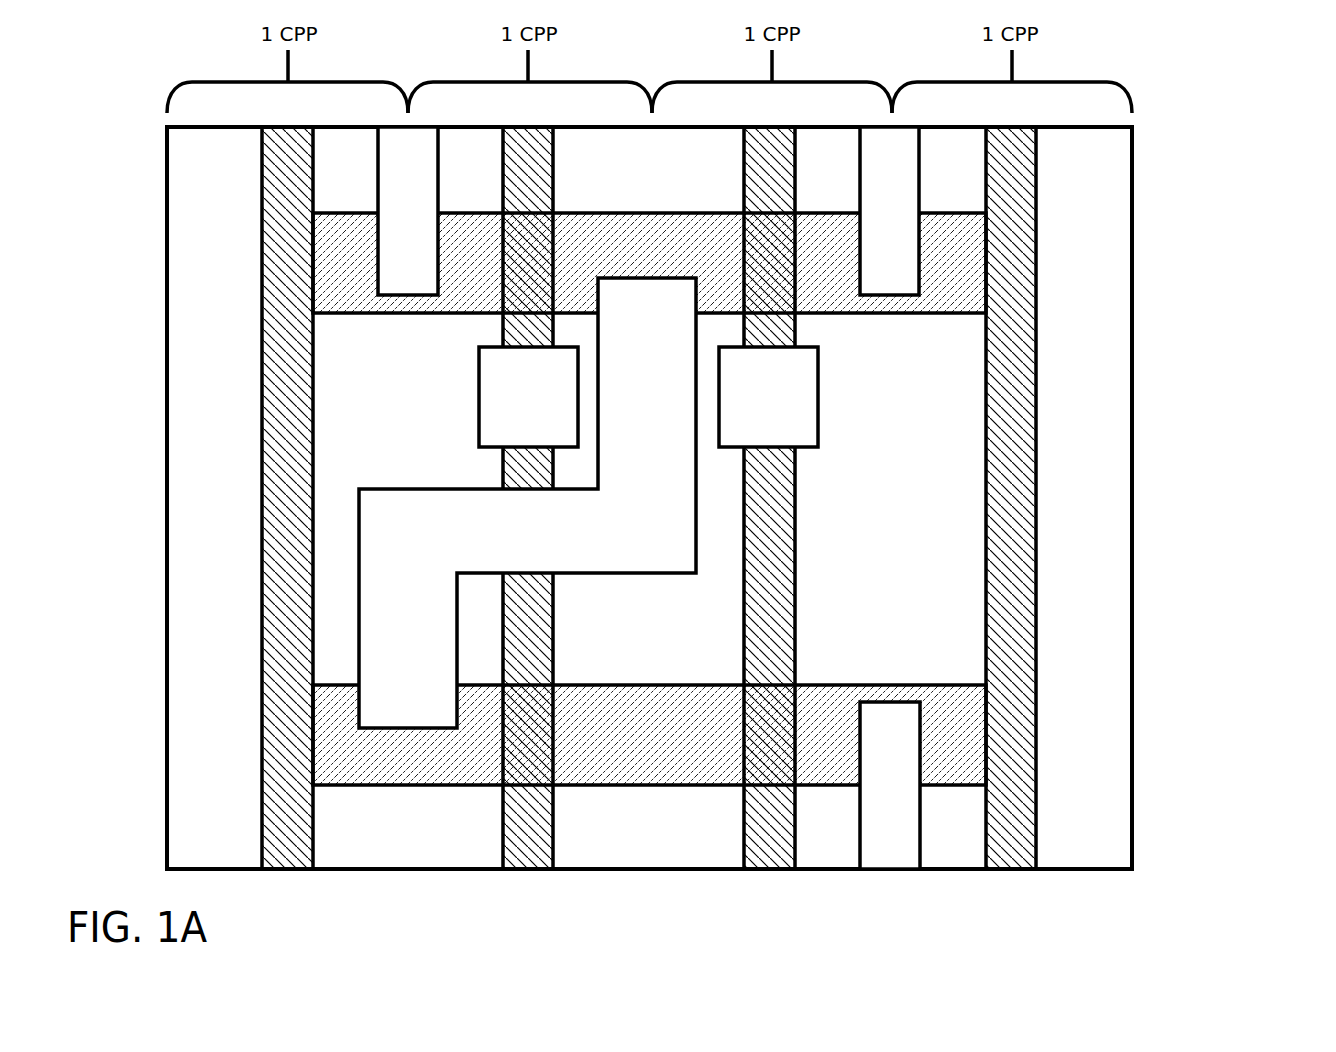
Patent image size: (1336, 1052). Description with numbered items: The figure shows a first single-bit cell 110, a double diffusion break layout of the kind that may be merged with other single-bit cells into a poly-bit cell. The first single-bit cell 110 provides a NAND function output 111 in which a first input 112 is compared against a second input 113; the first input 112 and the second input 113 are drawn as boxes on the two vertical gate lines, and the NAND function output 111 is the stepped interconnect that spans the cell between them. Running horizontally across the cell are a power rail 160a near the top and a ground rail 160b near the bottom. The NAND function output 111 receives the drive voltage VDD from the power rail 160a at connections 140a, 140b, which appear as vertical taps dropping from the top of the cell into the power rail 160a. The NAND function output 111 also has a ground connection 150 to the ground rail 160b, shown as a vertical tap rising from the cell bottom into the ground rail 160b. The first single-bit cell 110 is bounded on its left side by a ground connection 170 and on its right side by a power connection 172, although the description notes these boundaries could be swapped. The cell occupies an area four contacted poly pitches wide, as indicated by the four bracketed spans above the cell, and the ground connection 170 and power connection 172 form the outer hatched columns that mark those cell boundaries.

The first single-bit cell 110 is at (1252, 238).
The NAND function output 111 is at (527, 503).
The first input 112 is at (528, 397).
The second input 113 is at (768, 397).
The connection 140a is at (413, 212).
The connection 140b is at (898, 212).
The ground connection 150 is at (890, 852).
The power rail 160a is at (685, 212).
The ground rail 160b is at (682, 685).
The ground connection 170 is at (288, 498).
The power connection 172 is at (1023, 463).